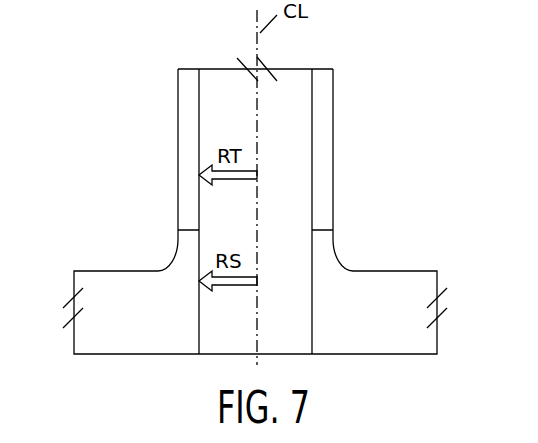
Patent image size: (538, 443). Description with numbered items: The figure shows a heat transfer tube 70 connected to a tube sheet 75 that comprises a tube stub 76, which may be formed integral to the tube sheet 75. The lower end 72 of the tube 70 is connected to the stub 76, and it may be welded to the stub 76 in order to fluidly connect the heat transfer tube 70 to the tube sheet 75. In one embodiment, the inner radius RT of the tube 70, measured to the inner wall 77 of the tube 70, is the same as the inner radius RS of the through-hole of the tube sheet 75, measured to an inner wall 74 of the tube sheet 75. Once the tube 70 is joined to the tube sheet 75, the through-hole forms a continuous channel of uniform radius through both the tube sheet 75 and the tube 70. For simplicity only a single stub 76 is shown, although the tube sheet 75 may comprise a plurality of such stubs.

The heat transfer tube 70 is at (338, 125).
The lower end 72 is at (335, 208).
The inner wall 74 is at (198, 292).
The tube sheet 75 is at (447, 268).
The tube stub 76 is at (337, 246).
The inner wall 77 is at (198, 158).